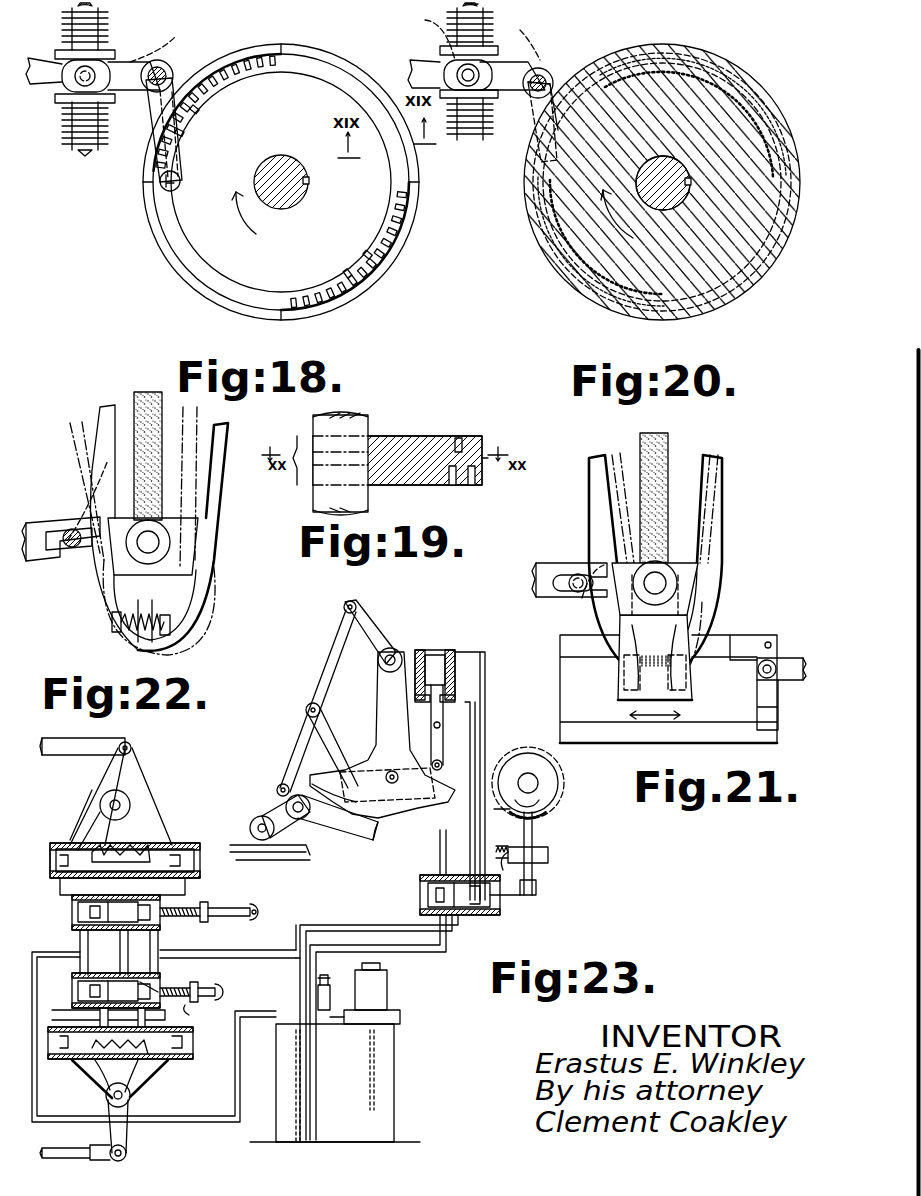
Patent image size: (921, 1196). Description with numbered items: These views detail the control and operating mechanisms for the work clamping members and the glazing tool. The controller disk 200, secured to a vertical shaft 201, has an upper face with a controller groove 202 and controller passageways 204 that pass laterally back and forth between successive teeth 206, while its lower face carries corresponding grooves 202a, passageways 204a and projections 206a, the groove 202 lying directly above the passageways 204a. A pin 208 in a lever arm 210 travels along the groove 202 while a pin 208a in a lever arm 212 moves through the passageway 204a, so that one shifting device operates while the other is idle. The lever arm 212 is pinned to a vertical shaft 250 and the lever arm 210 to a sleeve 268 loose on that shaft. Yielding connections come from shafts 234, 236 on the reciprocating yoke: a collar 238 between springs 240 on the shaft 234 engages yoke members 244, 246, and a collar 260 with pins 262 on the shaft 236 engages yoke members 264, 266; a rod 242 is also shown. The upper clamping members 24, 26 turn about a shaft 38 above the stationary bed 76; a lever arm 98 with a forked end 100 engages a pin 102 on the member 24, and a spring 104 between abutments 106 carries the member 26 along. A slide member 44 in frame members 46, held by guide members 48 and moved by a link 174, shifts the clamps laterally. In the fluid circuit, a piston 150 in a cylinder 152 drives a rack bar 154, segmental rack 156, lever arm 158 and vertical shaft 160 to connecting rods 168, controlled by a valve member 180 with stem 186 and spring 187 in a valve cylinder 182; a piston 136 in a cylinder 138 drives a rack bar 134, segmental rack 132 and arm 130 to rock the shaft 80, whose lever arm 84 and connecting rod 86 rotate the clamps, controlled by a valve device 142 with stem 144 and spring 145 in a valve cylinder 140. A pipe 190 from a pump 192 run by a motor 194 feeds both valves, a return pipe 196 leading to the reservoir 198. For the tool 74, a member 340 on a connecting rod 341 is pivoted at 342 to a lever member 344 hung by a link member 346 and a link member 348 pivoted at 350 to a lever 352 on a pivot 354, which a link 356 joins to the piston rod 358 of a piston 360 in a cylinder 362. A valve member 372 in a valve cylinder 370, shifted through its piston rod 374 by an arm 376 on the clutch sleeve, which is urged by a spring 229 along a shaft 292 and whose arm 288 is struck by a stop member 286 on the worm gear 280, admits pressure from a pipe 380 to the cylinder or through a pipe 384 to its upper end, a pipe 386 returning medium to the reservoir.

In FIG. 18, the controller disk 200 is at (326, 50).
In FIG. 20, the controller disk 200 is at (532, 226).
In FIG. 19, the controller disk 200 is at (387, 438).
In FIG. 18, the vertical shaft 201 is at (286, 164).
In FIG. 20, the vertical shaft 201 is at (651, 170).
In FIG. 19, the vertical shaft 201 is at (358, 414).
In FIG. 23, the vertical shaft 201 is at (536, 770).
In FIG. 18, the controller groove 202 is at (362, 100).
In FIG. 19, the controller groove 202 is at (458, 438).
In FIG. 18, the controller passageway 204 is at (228, 62).
In FIG. 18, the teeth or projections 206 is at (211, 85).
In FIG. 18, the pin 208 is at (164, 182).
In FIG. 18, the lever arm 210 is at (156, 114).
In FIG. 20, the lever arm 212 is at (538, 120).
In FIG. 20, the shaft 234 is at (480, 12).
In FIG. 18, the shaft 236 is at (88, 154).
In FIG. 20, the collar 238 is at (495, 48).
In FIG. 18, the springs 240 is at (98, 18).
In FIG. 20, the springs 240 is at (484, 30).
In FIG. 20, the rod 242 is at (458, 33).
In FIG. 20, the yoke member 244 is at (487, 62).
In FIG. 20, the yoke member 246 is at (540, 26).
In FIG. 18, the vertical shaft 250 is at (161, 72).
In FIG. 20, the vertical shaft 250 is at (544, 76).
In FIG. 18, the collar 260 is at (170, 38).
In FIG. 18, the pins 262 is at (78, 78).
In FIG. 18, the yoke member 264 is at (135, 60).
In FIG. 18, the yoke member 266 is at (38, 66).
In FIG. 18, the sleeve 268 is at (182, 54).
In FIG. 20, the controller groove 202a is at (600, 68).
In FIG. 20, the controller passageway 204a is at (695, 46).
In FIG. 20, the teeth or projections 206a is at (744, 80).
In FIG. 19, the teeth or projections 206a is at (458, 484).
In FIG. 20, the pin 208a is at (526, 176).
In FIG. 22, the bed 76 is at (137, 392).
In FIG. 21, the bed 76 is at (668, 446).
In FIG. 23, the bed 76 is at (290, 856).
In FIG. 22, the work clamping member 24 is at (110, 404).
In FIG. 21, the work clamping member 24 is at (588, 506).
In FIG. 22, the work clamping member 26 is at (222, 442).
In FIG. 21, the work clamping member 26 is at (724, 516).
In FIG. 22, the shaft 38 is at (153, 540).
In FIG. 21, the shaft 38 is at (655, 588).
In FIG. 22, the lever arm 98 is at (38, 558).
In FIG. 21, the lever arm 98 is at (540, 564).
In FIG. 22, the forked end 100 is at (56, 531).
In FIG. 21, the forked end 100 is at (590, 602).
In FIG. 22, the pin 102 is at (76, 532).
In FIG. 21, the pin 102 is at (580, 576).
In FIG. 22, the spring 104 is at (164, 652).
In FIG. 22, the abutments 106 is at (110, 616).
In FIG. 21, the link 174 is at (789, 666).
In FIG. 21, the overhanging guide members 48 is at (726, 692).
In FIG. 21, the slide member 44 is at (760, 704).
In FIG. 21, the frame members 46 is at (770, 726).
In FIG. 23, the connecting rod 168 is at (80, 754).
In FIG. 23, the lever arm 158 is at (88, 814).
In FIG. 23, the segmental rack 156 is at (88, 826).
In FIG. 23, the vertical shaft 160 is at (120, 804).
In FIG. 23, the rack bar 154 is at (136, 849).
In FIG. 23, the piston 150 is at (158, 840).
In FIG. 23, the cylinder 152 is at (198, 844).
In FIG. 23, the valve cylinder 182 is at (70, 890).
In FIG. 23, the double valve member 180 is at (100, 912).
In FIG. 23, the spring 187 is at (198, 908).
In FIG. 23, the valve stem 186 is at (238, 910).
In FIG. 23, the pipe 190 is at (62, 954).
In FIG. 23, the return pipe 196 is at (254, 944).
In FIG. 23, the double valve device 142 is at (158, 980).
In FIG. 23, the spring 145 is at (188, 984).
In FIG. 23, the valve cylinder 140 is at (78, 992).
In FIG. 23, the valve stem 144 is at (190, 1006).
In FIG. 23, the cylinder 138 is at (192, 1056).
In FIG. 23, the rack bar 134 is at (84, 1066).
In FIG. 23, the segmental rack 132 is at (96, 1074).
In FIG. 23, the piston 136 is at (160, 1066).
In FIG. 23, the arm 130 is at (140, 1080).
In FIG. 23, the shaft 80 is at (112, 1098).
In FIG. 23, the connecting rod 86 is at (72, 1148).
In FIG. 23, the lever arm 84 is at (124, 1138).
In FIG. 23, the link member 346 is at (376, 620).
In FIG. 23, the lever member 344 is at (322, 660).
In FIG. 23, the piston cylinder 362 is at (444, 652).
In FIG. 23, the piston 360 is at (448, 668).
In FIG. 23, the piston rod 358 is at (444, 704).
In FIG. 23, the link 356 is at (444, 738).
In FIG. 23, the link member 348 is at (327, 748).
In FIG. 23, the lever 352 is at (404, 768).
In FIG. 23, the pivot 342 is at (280, 786).
In FIG. 23, the glazing tool 74 is at (258, 818).
In FIG. 23, the pivot 354 is at (394, 780).
In FIG. 23, the pivot 350 is at (350, 810).
In FIG. 23, the connecting rod 341 is at (374, 834).
In FIG. 23, the member 340 is at (288, 830).
In FIG. 23, the stop member 286 is at (494, 812).
In FIG. 23, the pipe 384 is at (440, 858).
In FIG. 23, the valve cylinder 370 is at (420, 886).
In FIG. 23, the pipe 386 is at (343, 924).
In FIG. 23, the pipe 380 is at (452, 940).
In FIG. 23, the motor 194 is at (388, 982).
In FIG. 23, the pump 192 is at (400, 1014).
In FIG. 23, the reservoir 198 is at (390, 1042).
In FIG. 23, the worm gear 280 is at (560, 804).
In FIG. 23, the arm 288 is at (534, 832).
In FIG. 23, the spring 229 is at (550, 852).
In FIG. 23, the shaft 292 is at (550, 858).
In FIG. 23, the piston rod 374 is at (514, 866).
In FIG. 23, the arm 376 is at (536, 878).
In FIG. 23, the double valve member 372 is at (492, 902).